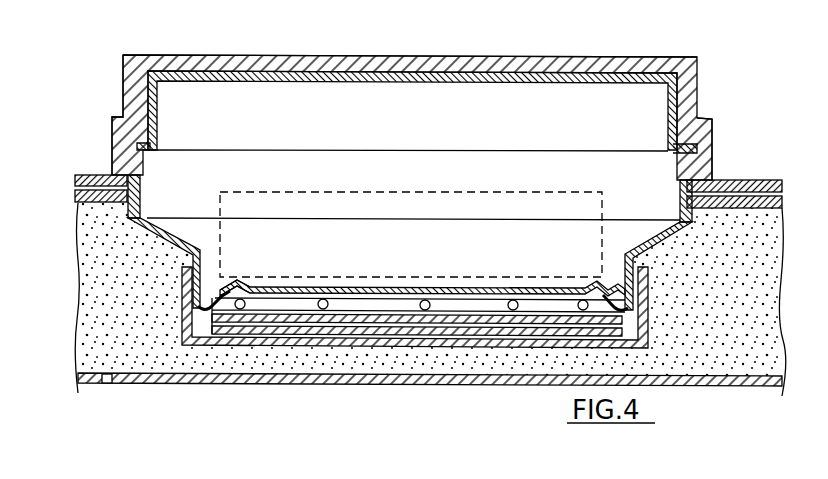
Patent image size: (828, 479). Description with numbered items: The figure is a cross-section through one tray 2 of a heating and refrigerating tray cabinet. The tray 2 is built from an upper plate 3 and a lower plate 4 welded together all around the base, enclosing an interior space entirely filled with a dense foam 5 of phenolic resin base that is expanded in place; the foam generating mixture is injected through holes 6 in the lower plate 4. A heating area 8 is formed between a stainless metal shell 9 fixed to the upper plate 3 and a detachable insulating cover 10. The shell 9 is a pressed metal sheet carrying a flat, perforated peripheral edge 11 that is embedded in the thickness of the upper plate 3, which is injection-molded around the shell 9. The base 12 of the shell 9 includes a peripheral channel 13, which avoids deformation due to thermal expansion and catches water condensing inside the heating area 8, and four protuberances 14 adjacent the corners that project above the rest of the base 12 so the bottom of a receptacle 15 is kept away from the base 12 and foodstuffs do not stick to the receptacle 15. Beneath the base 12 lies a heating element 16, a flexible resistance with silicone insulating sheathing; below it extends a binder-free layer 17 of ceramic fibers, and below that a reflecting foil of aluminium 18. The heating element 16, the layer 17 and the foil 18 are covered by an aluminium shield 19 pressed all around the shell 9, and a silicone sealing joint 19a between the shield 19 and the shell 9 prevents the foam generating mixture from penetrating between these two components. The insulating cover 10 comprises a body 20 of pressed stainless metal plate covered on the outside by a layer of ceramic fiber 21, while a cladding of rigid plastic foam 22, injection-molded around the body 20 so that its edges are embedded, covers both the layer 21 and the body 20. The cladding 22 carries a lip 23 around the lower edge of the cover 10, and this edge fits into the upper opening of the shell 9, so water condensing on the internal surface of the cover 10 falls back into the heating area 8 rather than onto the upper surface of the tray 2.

The tray 2 is at (732, 168).
The upper plate 3 is at (762, 180).
The lower plate 4 is at (516, 386).
The dense foam 5 is at (163, 358).
The holes 6 is at (102, 382).
The heating area 8 is at (430, 103).
The stainless metal shell 9 is at (182, 241).
The insulating cover 10 is at (359, 48).
The flat peripheral edge 11 is at (84, 159).
The base 12 is at (363, 290).
The peripheral channel 13 is at (213, 300).
The protuberances 14 is at (252, 279).
The receptacle 15 is at (496, 193).
The heating element 16 is at (426, 299).
The layer of ceramic fibers 17 is at (498, 318).
The reflecting foil of aluminium 18 is at (548, 330).
The aluminium shield 19 is at (355, 348).
The silicone sealing joint 19a is at (626, 278).
The body 20 is at (268, 84).
The layer of ceramic fiber 21 is at (292, 56).
The cladding of rigid plastic foam 22 is at (148, 56).
The lip 23 is at (142, 204).